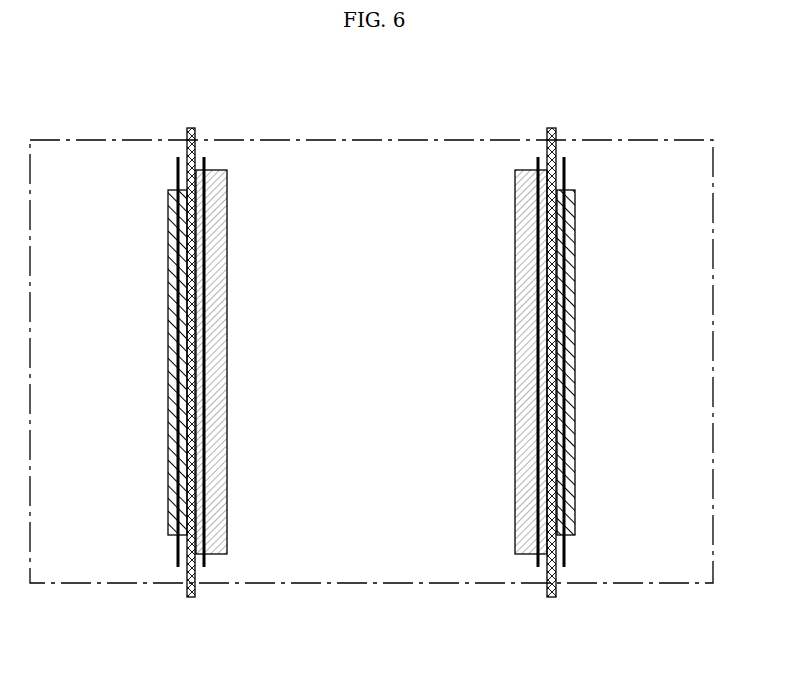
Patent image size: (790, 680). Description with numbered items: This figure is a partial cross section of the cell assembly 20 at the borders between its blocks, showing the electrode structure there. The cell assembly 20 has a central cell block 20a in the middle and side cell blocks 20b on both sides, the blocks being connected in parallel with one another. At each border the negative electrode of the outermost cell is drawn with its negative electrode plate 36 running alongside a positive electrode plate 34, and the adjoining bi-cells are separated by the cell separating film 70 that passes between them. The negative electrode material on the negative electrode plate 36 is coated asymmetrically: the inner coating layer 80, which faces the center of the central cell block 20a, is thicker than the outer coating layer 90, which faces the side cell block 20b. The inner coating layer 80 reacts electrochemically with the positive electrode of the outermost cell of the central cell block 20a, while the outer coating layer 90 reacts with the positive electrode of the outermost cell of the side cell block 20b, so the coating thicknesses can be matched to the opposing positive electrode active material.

The cell assembly 20 is at (111, 89).
The central cell block 20a is at (355, 546).
The side cell block 20b is at (112, 546).
The positive electrode plate 34 is at (176, 157).
The negative electrode plate 36 is at (206, 157).
The cell separating film 70 is at (551, 128).
The inner coating layer 80 is at (217, 262).
The outer coating layer 90 is at (200, 215).